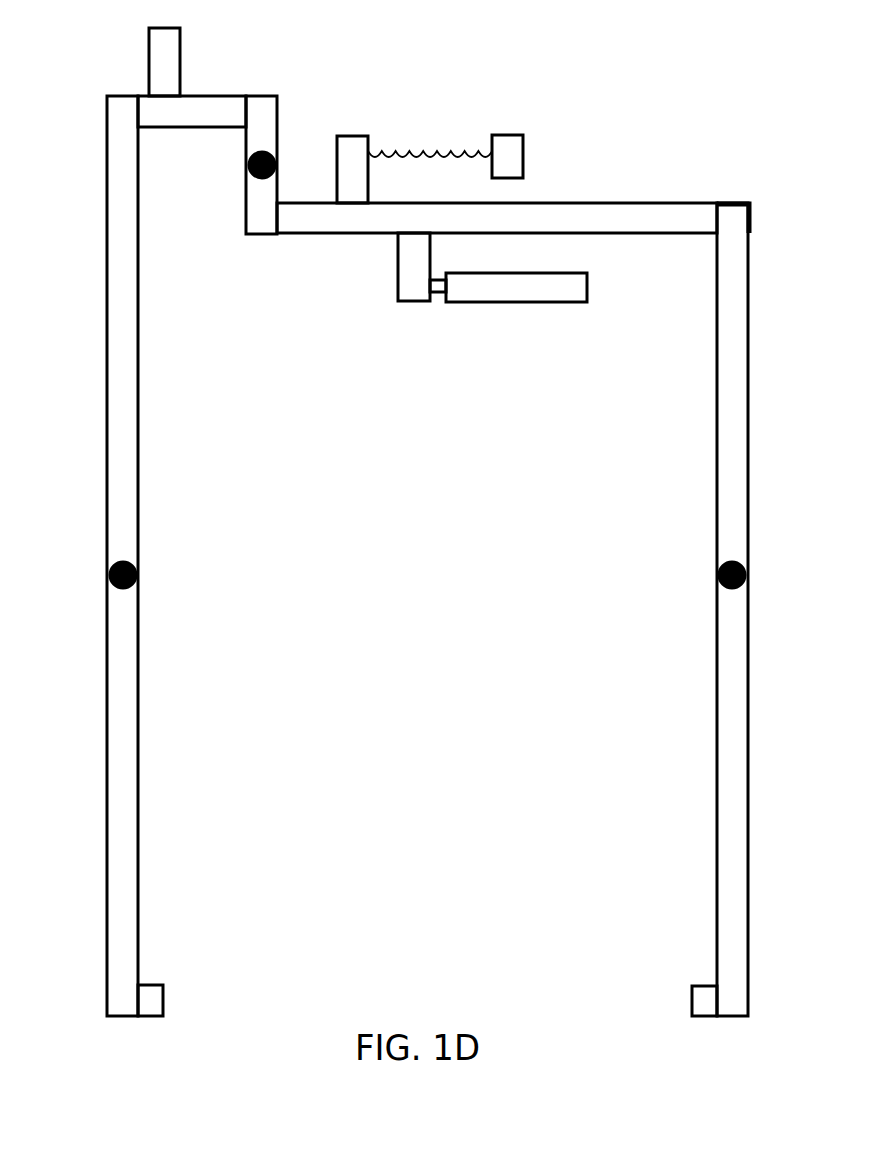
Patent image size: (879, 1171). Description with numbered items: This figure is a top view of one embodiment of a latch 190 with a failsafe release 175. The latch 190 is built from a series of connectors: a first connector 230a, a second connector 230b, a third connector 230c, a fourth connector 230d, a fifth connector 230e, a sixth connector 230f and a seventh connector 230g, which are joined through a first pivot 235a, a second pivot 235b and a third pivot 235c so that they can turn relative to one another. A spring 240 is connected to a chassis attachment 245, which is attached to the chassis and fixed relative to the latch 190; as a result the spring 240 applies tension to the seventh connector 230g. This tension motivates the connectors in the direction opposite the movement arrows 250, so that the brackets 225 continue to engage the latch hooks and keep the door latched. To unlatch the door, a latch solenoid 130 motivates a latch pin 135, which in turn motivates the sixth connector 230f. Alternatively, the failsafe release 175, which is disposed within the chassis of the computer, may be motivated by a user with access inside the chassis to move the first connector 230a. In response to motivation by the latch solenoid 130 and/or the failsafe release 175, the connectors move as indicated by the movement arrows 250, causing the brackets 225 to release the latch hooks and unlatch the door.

The latch 190 is at (693, 103).
The failsafe release 175 is at (148, 73).
The movement arrows 250 is at (258, 80).
The first connector 230a is at (182, 128).
The second connector 230b is at (245, 221).
The third connector 230c is at (673, 235).
The fourth connector 230d is at (138, 491).
The fifth connector 230e is at (717, 495).
The sixth connector 230f is at (398, 283).
The seventh connector 230g is at (343, 136).
The first pivot 235a is at (271, 152).
The second pivot 235b is at (136, 574).
The third pivot 235c is at (720, 574).
The spring 240 is at (428, 150).
The chassis attachment 245 is at (500, 135).
The latch pin 135 is at (440, 302).
The latch solenoid 130 is at (545, 303).
The brackets 225 is at (164, 992).